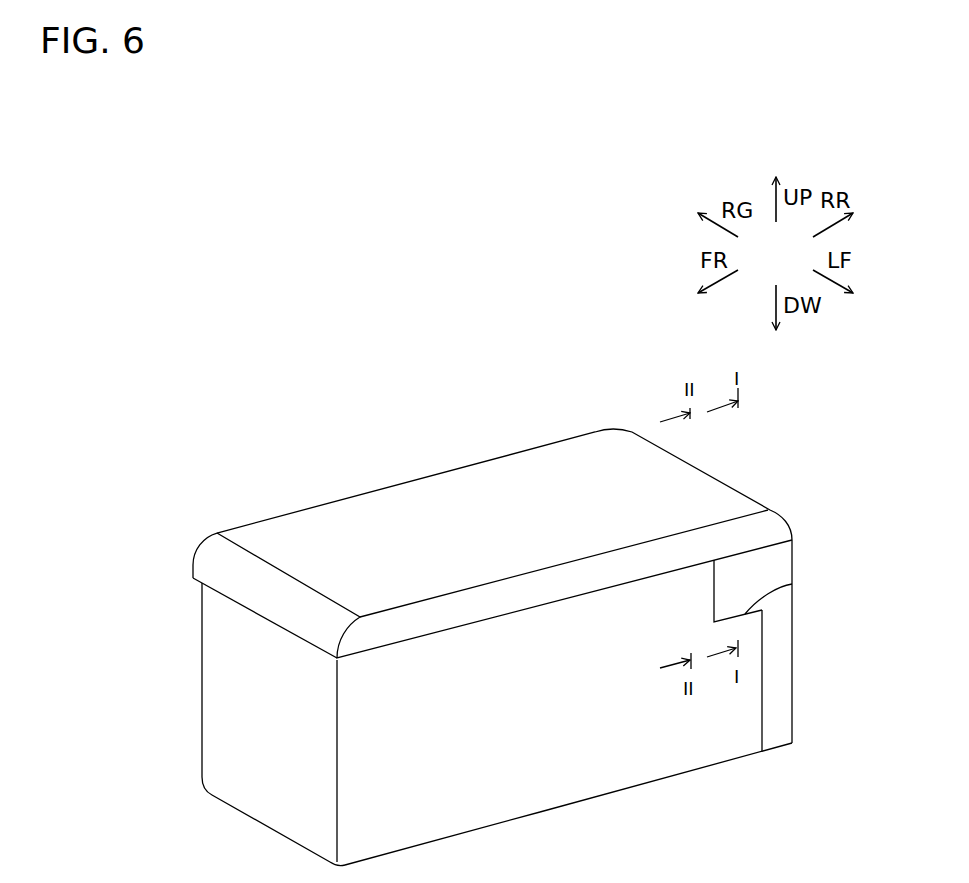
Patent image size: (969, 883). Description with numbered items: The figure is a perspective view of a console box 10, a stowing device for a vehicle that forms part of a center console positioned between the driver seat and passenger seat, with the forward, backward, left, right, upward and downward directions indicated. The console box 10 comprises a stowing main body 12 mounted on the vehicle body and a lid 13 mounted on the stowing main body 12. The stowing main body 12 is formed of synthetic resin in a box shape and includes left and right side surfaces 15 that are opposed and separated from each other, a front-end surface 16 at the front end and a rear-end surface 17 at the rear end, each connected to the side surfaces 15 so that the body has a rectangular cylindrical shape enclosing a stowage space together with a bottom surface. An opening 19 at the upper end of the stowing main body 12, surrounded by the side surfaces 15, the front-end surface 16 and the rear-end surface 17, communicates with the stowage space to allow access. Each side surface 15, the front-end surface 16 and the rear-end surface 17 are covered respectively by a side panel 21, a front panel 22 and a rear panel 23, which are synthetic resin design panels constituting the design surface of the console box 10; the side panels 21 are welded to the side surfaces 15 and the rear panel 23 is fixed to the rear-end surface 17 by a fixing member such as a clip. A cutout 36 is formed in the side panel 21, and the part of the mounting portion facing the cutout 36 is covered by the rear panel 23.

The console box 10 is at (517, 387).
The stowing main body 12 is at (598, 765).
The lid 13 is at (452, 458).
The side surface 15 is at (525, 768).
The front-end surface 16 is at (257, 782).
The rear-end surface 17 is at (796, 617).
The opening 19 is at (555, 587).
The side panel 21 is at (202, 677).
The front panel 22 is at (283, 815).
The rear panel 23 is at (793, 648).
The cutout 36 is at (792, 584).